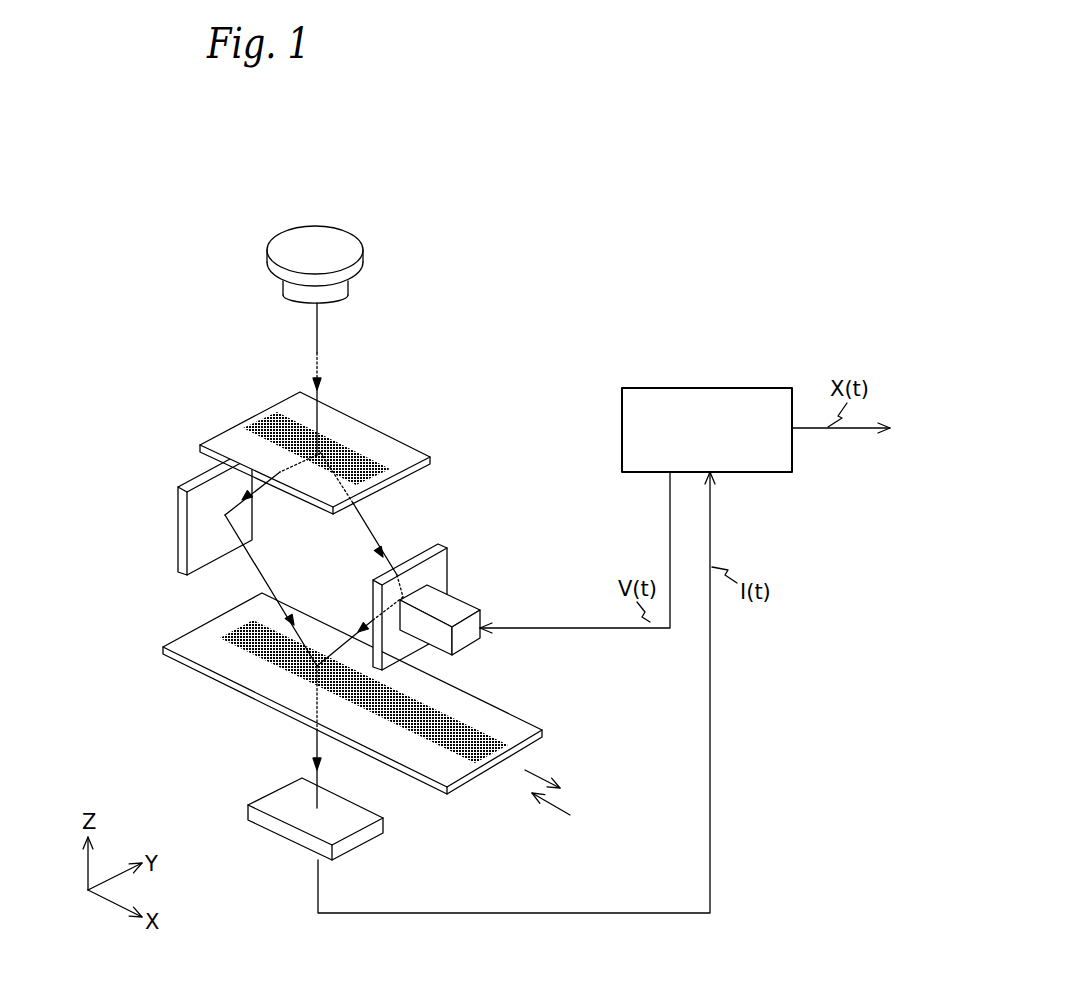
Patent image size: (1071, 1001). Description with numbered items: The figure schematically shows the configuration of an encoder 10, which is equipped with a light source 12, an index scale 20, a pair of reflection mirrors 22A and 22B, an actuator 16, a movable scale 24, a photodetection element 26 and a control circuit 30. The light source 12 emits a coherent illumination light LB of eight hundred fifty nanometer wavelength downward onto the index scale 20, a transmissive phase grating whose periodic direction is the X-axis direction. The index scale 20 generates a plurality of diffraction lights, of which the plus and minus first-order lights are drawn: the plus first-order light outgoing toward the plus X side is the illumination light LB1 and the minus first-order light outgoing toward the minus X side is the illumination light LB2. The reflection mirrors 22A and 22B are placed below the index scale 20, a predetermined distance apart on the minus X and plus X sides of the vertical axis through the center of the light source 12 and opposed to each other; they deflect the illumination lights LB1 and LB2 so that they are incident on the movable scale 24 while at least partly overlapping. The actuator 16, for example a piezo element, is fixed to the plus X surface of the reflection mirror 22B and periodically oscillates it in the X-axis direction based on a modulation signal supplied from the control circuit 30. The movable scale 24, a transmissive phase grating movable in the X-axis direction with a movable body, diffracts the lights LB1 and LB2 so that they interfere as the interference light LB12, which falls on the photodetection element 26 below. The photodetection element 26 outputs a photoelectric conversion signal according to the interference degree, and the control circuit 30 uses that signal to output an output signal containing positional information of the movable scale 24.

The encoder 10 is at (515, 150).
The light source 12 is at (327, 245).
The actuator 16 is at (467, 619).
The index scale 20 is at (322, 452).
The reflection mirror 22A is at (189, 506).
The reflection mirror 22B is at (453, 604).
The movable scale 24 is at (360, 693).
The photodetection element 26 is at (303, 833).
The control circuit 30 is at (707, 400).
The illumination light LB is at (351, 379).
The illumination light LB1 is at (384, 559).
The illumination light LB2 is at (206, 560).
The interference light LB12 is at (261, 737).